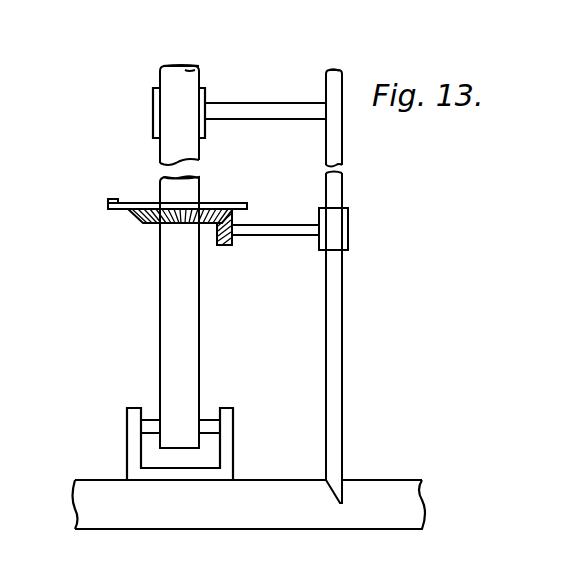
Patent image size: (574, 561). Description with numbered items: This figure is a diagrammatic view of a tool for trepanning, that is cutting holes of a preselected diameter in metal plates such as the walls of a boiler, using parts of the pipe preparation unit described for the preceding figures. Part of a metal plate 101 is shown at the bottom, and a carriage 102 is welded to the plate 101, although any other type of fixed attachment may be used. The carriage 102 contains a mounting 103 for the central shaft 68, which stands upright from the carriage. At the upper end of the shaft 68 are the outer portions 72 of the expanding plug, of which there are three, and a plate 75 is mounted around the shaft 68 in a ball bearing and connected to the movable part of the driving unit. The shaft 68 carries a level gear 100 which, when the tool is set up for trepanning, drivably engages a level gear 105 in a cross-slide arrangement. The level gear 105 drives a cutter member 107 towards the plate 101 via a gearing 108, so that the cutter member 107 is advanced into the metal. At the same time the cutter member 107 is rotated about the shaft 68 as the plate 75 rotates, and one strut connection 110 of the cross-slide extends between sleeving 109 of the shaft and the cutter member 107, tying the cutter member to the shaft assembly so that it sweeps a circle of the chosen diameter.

The central shaft 68 is at (166, 191).
The outer portions of the plug 72 is at (118, 199).
The plate 75 is at (110, 206).
The level gear 100 is at (148, 223).
The metal plate 101 is at (240, 515).
The carriage 102 is at (129, 419).
The mounting 103 is at (152, 426).
The level gear 105 is at (220, 242).
The cutter member 107 is at (334, 362).
The gearing 108 is at (338, 229).
The sleeving 109 is at (153, 94).
The strut connection 110 is at (238, 111).